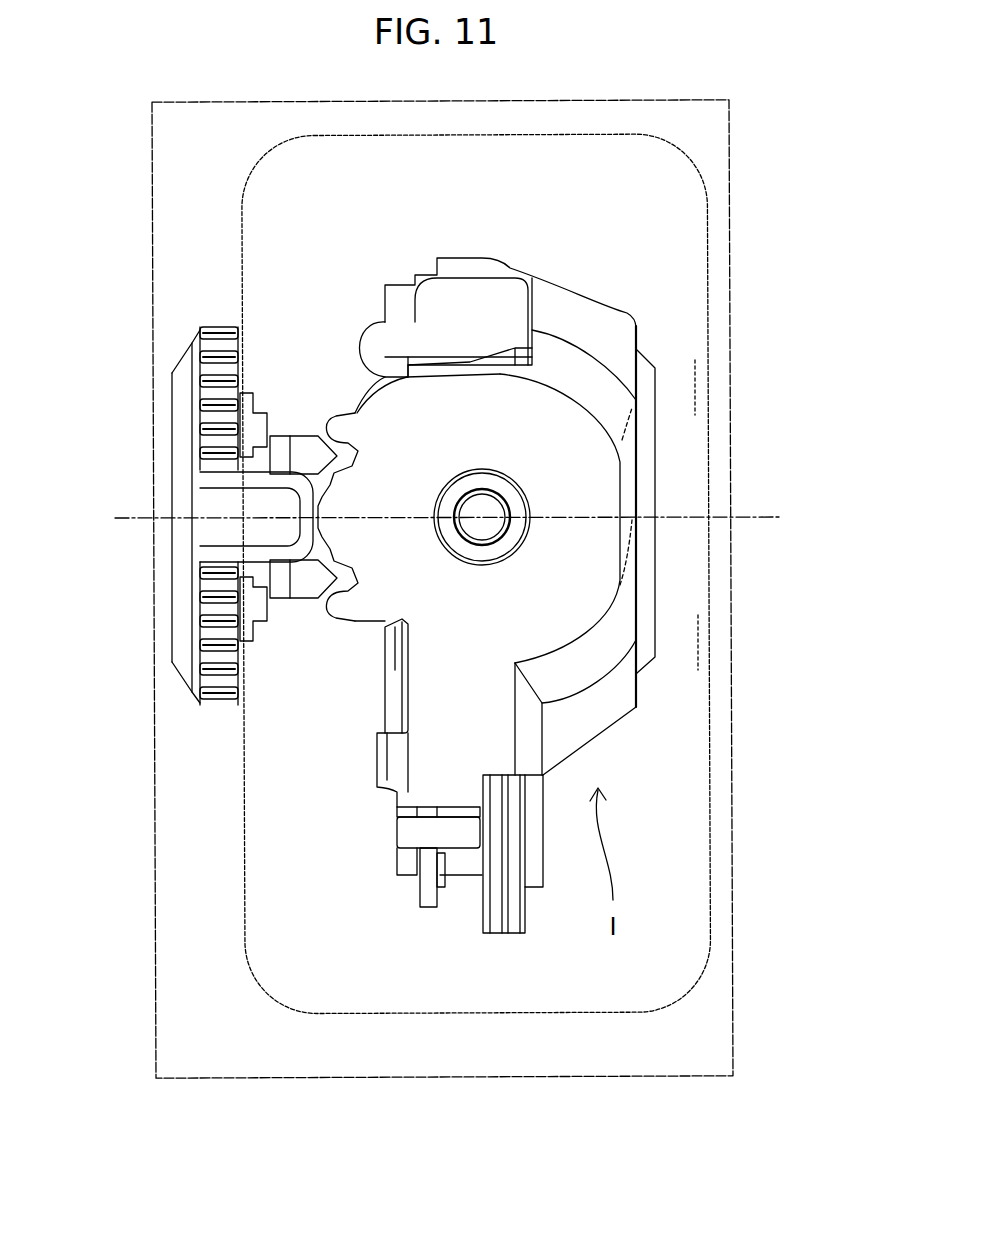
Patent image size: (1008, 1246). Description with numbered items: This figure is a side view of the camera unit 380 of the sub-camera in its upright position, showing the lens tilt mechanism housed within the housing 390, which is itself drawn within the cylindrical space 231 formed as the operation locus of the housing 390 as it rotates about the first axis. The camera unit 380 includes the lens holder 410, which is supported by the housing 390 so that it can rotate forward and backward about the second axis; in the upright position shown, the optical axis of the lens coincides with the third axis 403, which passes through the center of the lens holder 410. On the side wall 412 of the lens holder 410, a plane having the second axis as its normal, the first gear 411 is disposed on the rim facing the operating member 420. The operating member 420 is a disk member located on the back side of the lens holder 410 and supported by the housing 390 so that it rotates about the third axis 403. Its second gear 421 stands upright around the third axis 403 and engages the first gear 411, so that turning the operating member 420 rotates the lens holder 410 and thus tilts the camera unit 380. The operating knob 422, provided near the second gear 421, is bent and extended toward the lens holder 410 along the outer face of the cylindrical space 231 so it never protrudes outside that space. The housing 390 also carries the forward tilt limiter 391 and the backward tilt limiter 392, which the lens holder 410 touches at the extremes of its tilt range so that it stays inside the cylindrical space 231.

The cylindrical space 231 is at (732, 920).
The camera unit 380 is at (550, 243).
The housing 390 is at (687, 995).
The forward tilt limiter 391 is at (695, 368).
The backward tilt limiter 392 is at (698, 617).
The third axis 403 is at (780, 517).
The lens holder 410 is at (615, 333).
The first gear 411 is at (355, 432).
The side wall 412 is at (543, 613).
The operating member 420 is at (202, 327).
The second gear 421 is at (215, 382).
The operating knob 422 is at (283, 535).